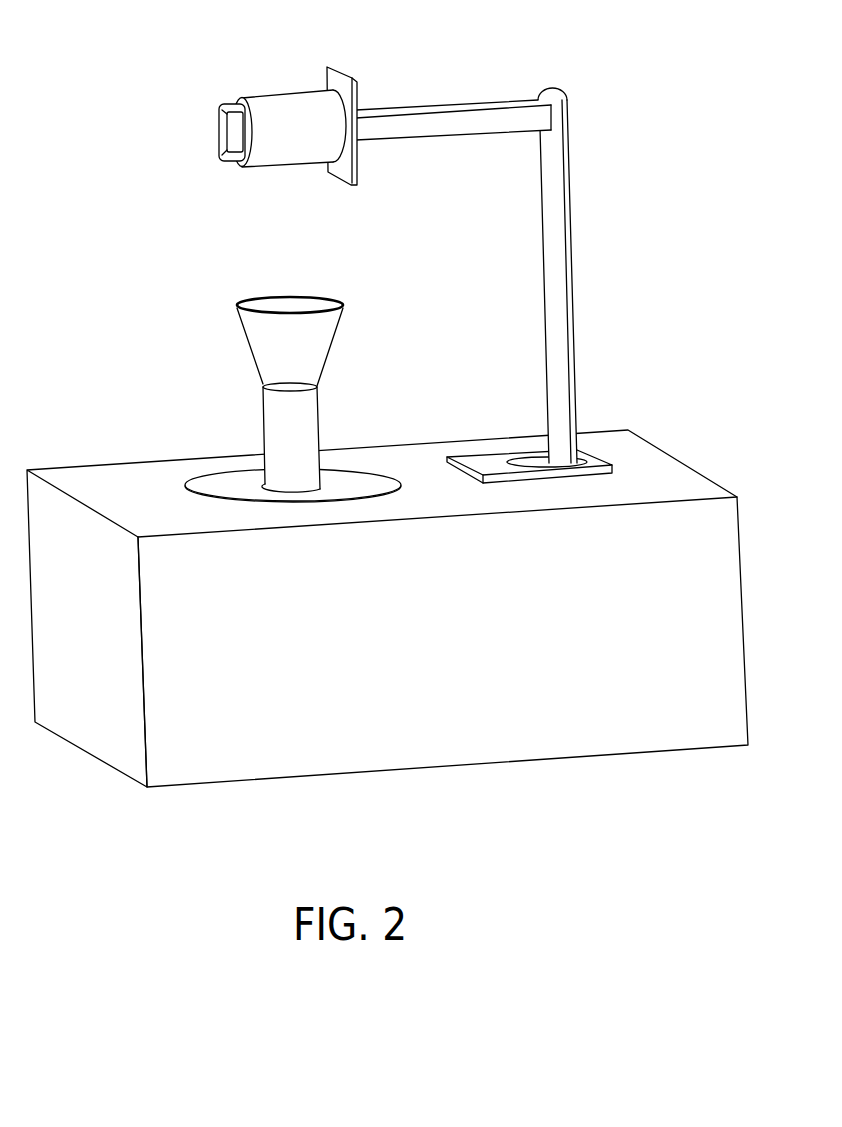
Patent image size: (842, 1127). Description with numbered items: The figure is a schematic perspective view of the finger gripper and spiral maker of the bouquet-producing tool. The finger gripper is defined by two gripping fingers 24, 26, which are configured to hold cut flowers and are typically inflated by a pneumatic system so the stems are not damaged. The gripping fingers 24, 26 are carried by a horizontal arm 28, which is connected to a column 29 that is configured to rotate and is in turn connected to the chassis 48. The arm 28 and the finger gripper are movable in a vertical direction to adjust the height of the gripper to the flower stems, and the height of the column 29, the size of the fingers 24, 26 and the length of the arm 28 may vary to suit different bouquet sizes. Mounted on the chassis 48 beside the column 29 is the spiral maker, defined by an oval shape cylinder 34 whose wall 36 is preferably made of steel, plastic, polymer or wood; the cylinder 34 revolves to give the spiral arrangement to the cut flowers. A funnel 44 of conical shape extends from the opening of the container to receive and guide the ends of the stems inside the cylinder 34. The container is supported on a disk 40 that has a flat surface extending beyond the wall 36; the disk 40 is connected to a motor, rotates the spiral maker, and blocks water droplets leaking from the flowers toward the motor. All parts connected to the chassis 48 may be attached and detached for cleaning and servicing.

The gripping finger 24 is at (242, 108).
The gripping finger 26 is at (291, 108).
The horizontal arm 28 is at (445, 110).
The column 29 is at (565, 210).
The oval shape cylinder 34 is at (287, 428).
The wall 36 is at (293, 415).
The disk 40 is at (208, 490).
The funnel 44 is at (263, 340).
The chassis 48 is at (687, 713).